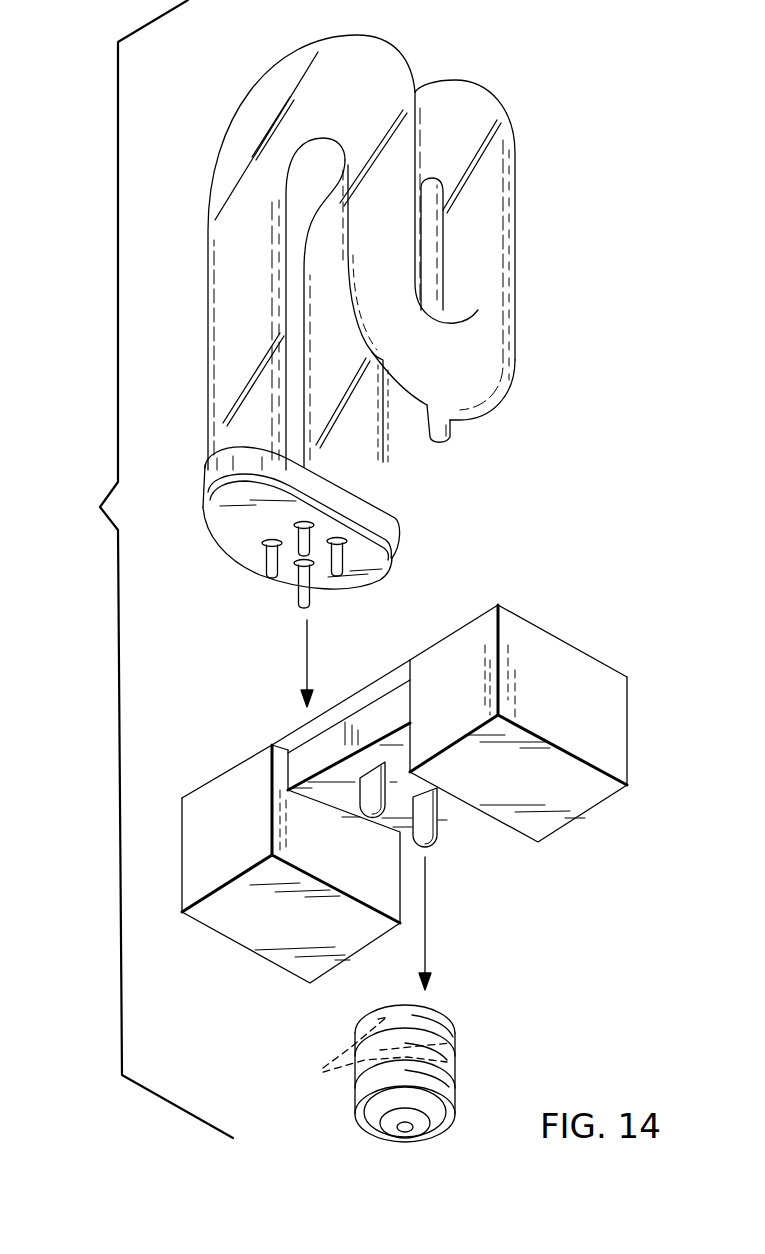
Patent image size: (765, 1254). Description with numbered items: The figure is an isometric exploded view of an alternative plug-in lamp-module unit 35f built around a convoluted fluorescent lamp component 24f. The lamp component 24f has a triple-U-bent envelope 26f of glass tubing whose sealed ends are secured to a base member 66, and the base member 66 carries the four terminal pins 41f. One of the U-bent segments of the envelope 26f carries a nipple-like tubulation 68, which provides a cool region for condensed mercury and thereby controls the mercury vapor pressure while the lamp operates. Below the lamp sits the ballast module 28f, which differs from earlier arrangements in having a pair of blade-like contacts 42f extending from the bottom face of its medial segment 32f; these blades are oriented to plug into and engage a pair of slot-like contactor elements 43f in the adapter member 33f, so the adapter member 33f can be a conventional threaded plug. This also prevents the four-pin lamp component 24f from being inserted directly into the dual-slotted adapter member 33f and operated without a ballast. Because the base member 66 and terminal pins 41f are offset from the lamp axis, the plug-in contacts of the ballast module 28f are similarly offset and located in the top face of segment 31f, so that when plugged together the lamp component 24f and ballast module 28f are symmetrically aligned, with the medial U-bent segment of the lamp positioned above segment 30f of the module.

The fluorescent lamp component 24f is at (521, 221).
The triple-U-bent envelope 26f is at (500, 331).
The nipple-like tubulation 68 is at (452, 437).
The base member 66 is at (385, 528).
The terminal pins 41f is at (304, 594).
The medial segment 32f is at (367, 717).
The segment 31f is at (210, 807).
The ballast module 28f is at (557, 723).
The segment 30f is at (610, 703).
The blade-like contacts 42f is at (415, 833).
The slot-like contactor elements 43f is at (370, 1048).
The adapter member 33f is at (422, 1052).
The lamp-module unit 35f is at (73, 515).